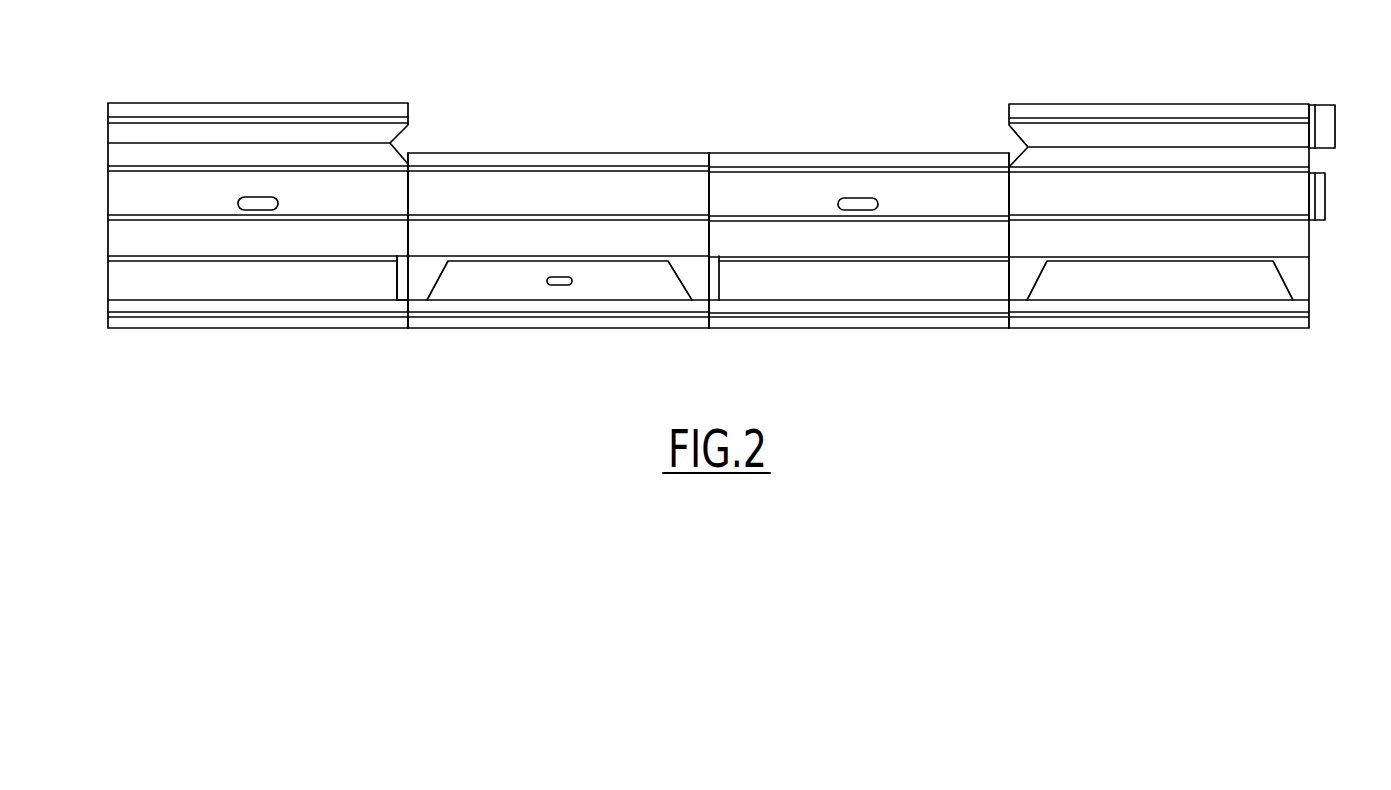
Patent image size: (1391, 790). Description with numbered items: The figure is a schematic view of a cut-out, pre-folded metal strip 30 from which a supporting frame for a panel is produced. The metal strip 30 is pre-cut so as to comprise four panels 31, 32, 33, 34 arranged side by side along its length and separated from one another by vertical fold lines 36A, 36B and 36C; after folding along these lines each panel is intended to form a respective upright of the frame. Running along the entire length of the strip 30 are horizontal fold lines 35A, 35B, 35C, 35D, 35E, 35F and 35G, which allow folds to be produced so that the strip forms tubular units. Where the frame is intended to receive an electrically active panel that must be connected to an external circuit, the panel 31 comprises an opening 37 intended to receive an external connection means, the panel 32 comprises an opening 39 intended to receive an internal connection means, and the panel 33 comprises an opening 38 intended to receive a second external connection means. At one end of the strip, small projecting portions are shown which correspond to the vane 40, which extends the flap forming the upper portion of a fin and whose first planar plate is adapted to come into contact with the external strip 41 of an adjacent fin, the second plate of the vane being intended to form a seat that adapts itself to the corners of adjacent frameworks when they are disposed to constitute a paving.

The metal strip 30 is at (720, 210).
The panel 31 is at (288, 330).
The panel 32 is at (480, 330).
The panel 33 is at (807, 330).
The panel 34 is at (1073, 330).
The horizontal fold line 35A is at (137, 318).
The horizontal fold line 35B is at (203, 300).
The horizontal fold line 35C is at (170, 258).
The horizontal fold line 35D is at (127, 213).
The horizontal fold line 35E is at (152, 169).
The horizontal fold line 35F is at (215, 143).
The horizontal fold line 35G is at (300, 123).
The vertical fold line 36A is at (408, 193).
The vertical fold line 36B is at (709, 192).
The vertical fold line 36C is at (1009, 192).
The opening 37 is at (272, 207).
The opening 38 is at (877, 209).
The opening 39 is at (561, 286).
The vane 40 is at (1323, 127).
The external strip 41 is at (1318, 200).